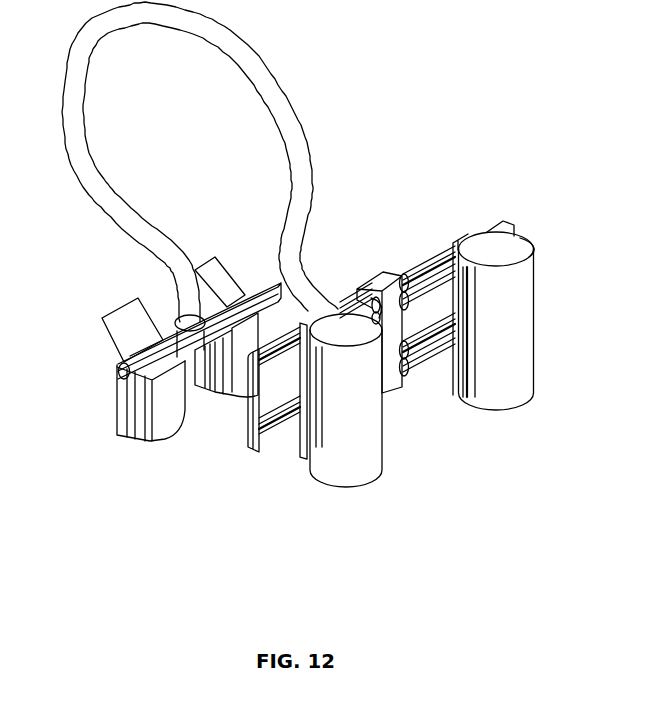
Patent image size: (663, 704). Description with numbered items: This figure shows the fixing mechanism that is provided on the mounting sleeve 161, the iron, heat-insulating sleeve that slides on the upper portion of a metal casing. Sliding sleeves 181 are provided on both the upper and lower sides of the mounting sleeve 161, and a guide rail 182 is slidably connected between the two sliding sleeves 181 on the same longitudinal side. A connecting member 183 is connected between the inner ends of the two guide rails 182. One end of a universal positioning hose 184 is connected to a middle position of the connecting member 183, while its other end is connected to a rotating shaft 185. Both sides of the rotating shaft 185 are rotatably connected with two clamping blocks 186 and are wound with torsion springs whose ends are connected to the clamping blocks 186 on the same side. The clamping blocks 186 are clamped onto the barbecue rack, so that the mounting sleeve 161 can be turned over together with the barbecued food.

The mounting sleeve 161 is at (349, 465).
The sliding sleeve 181 is at (452, 240).
The guide rail 182 is at (431, 255).
The connecting member 183 is at (386, 272).
The universal positioning hose 184 is at (303, 178).
The rotating shaft 185 is at (130, 364).
The clamping block 186 is at (158, 420).